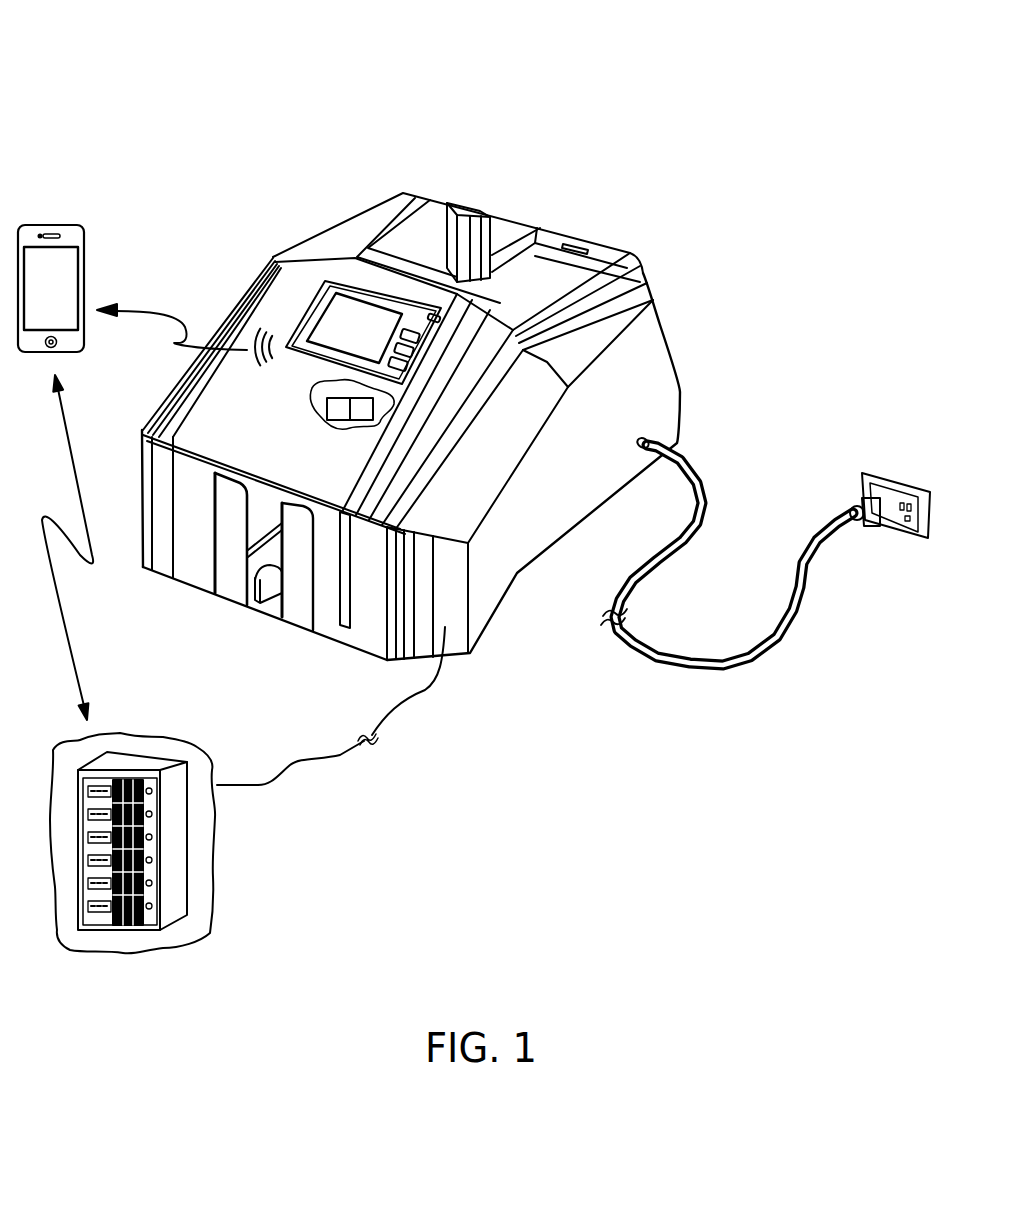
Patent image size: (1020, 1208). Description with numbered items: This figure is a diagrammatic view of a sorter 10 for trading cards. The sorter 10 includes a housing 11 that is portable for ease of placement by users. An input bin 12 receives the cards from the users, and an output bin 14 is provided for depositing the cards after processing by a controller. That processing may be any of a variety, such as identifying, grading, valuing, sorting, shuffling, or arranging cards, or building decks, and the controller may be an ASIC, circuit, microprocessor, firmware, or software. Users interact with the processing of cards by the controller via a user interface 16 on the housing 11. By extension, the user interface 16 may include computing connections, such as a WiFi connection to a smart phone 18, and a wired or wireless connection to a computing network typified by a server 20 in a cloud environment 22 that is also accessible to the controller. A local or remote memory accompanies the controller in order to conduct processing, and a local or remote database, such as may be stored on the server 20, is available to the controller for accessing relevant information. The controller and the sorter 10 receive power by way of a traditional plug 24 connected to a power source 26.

The sorter 10 is at (266, 84).
The housing 11 is at (630, 320).
The input bin 12 is at (448, 248).
The output bin 14 is at (262, 568).
The user interface 16 is at (340, 340).
The smart phone 18 is at (72, 223).
The server 20 is at (122, 928).
The cloud environment 22 is at (217, 835).
The plug 24 is at (857, 503).
The power source 26 is at (893, 480).